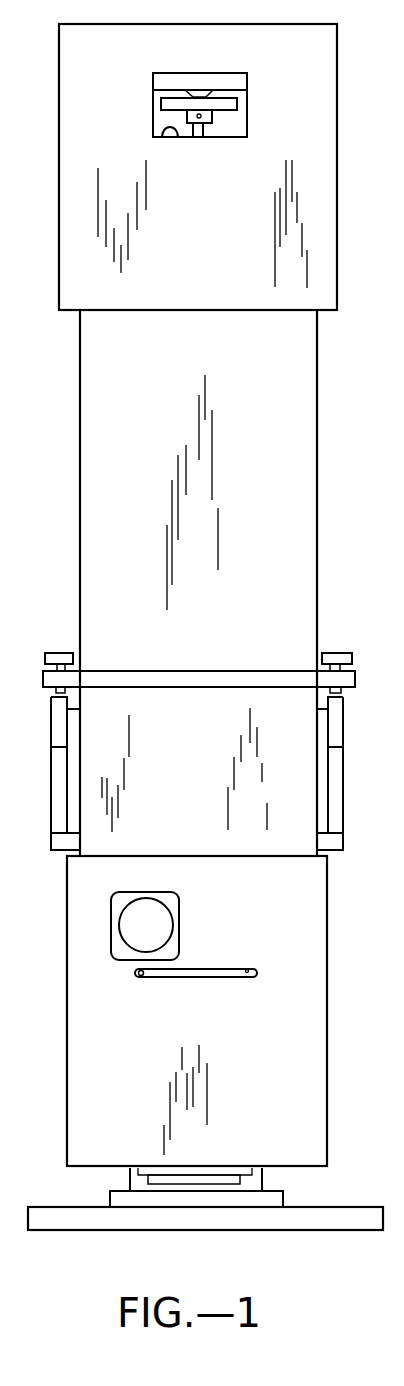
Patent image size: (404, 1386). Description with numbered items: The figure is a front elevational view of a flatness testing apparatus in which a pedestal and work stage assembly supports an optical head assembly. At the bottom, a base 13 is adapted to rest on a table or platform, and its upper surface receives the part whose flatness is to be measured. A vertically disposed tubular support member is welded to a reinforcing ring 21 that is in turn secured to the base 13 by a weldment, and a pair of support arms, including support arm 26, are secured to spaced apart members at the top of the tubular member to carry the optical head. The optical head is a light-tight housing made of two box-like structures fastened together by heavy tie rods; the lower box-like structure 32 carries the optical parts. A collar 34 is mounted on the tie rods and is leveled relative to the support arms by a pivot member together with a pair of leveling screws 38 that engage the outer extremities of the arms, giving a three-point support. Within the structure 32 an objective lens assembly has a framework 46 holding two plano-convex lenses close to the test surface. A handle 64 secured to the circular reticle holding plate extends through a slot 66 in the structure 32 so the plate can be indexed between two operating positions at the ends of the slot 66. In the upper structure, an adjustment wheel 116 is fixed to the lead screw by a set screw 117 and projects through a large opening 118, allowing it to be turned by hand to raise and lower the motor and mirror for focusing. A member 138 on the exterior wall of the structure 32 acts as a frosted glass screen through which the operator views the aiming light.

The base 13 is at (355, 1222).
The reinforcing ring 21 is at (276, 1200).
The support arm 26 is at (58, 722).
The second box-like structure 32 is at (235, 1011).
The collar 34 is at (198, 680).
The leveling screws 38 is at (60, 652).
The framework 46 is at (262, 1172).
The handle 64 is at (139, 977).
The slot 66 is at (247, 969).
The adjustment wheel 116 is at (237, 104).
The set screw 117 is at (201, 123).
The opening 118 is at (177, 137).
The member 138 is at (163, 927).